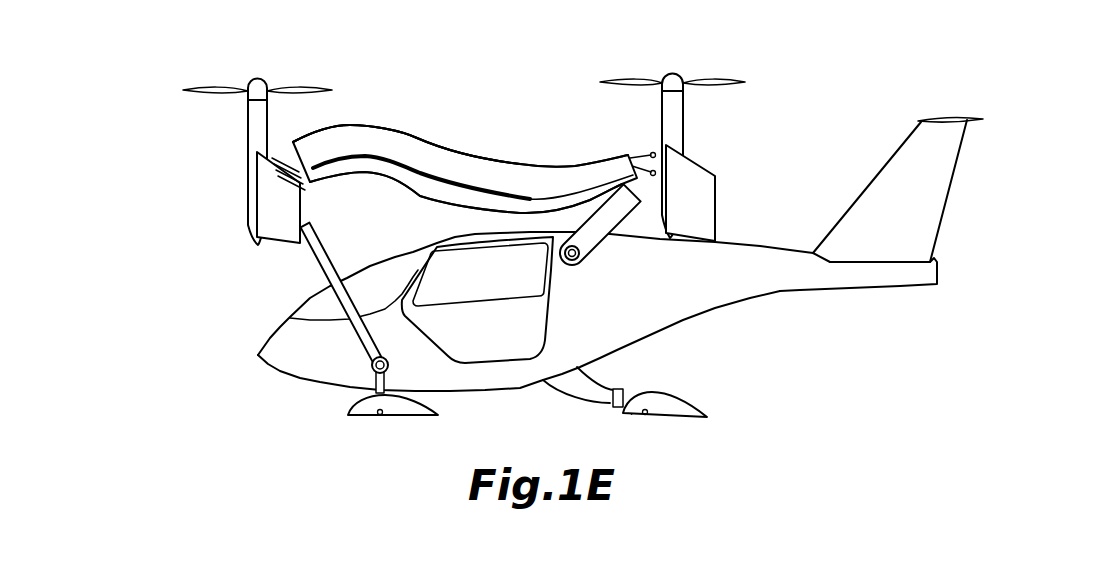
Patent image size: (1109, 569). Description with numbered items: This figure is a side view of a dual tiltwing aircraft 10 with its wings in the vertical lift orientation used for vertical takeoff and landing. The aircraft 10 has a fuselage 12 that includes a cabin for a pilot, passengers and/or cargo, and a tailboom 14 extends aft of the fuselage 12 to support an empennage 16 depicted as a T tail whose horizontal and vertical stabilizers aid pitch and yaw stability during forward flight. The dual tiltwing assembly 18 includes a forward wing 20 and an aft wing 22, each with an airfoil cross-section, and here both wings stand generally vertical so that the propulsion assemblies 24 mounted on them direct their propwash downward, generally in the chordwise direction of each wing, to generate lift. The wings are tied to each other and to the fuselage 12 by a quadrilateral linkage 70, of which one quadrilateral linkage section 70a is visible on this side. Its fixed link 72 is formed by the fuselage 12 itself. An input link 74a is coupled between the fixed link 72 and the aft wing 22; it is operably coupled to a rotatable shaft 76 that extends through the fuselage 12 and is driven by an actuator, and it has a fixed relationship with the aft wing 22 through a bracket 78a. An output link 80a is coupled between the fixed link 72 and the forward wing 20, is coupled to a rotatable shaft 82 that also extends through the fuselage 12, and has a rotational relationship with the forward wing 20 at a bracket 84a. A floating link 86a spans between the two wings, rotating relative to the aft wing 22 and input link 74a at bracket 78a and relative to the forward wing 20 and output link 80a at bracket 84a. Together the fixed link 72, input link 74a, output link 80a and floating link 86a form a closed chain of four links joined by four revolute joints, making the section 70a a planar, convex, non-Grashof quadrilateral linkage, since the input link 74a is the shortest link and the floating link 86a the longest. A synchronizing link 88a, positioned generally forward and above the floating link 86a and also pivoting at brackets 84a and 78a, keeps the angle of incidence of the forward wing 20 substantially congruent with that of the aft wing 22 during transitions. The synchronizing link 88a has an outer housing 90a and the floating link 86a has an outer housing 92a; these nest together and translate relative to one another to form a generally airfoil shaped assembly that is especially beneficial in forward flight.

The aircraft 10 is at (788, 72).
The fuselage 12 is at (775, 253).
The tailboom 14 is at (790, 287).
The empennage 16 is at (900, 168).
The dual tiltwing assembly 18 is at (702, 160).
The forward wing 20 is at (267, 203).
The aft wing 22 is at (714, 178).
The propulsion assembly 24 is at (250, 121).
The quadrilateral linkage 70 is at (347, 118).
The quadrilateral linkage section 70a is at (443, 150).
The fixed link 72 is at (612, 333).
The input link 74a is at (593, 228).
The rotatable shaft 76 is at (580, 260).
The bracket 78a is at (653, 150).
The output link 80a is at (325, 270).
The rotatable shaft 82 is at (392, 363).
The bracket 84a is at (273, 156).
The floating link 86a is at (408, 180).
The synchronizing link 88a is at (487, 167).
The outer housing 90a is at (390, 137).
The outer housing 92a is at (353, 171).